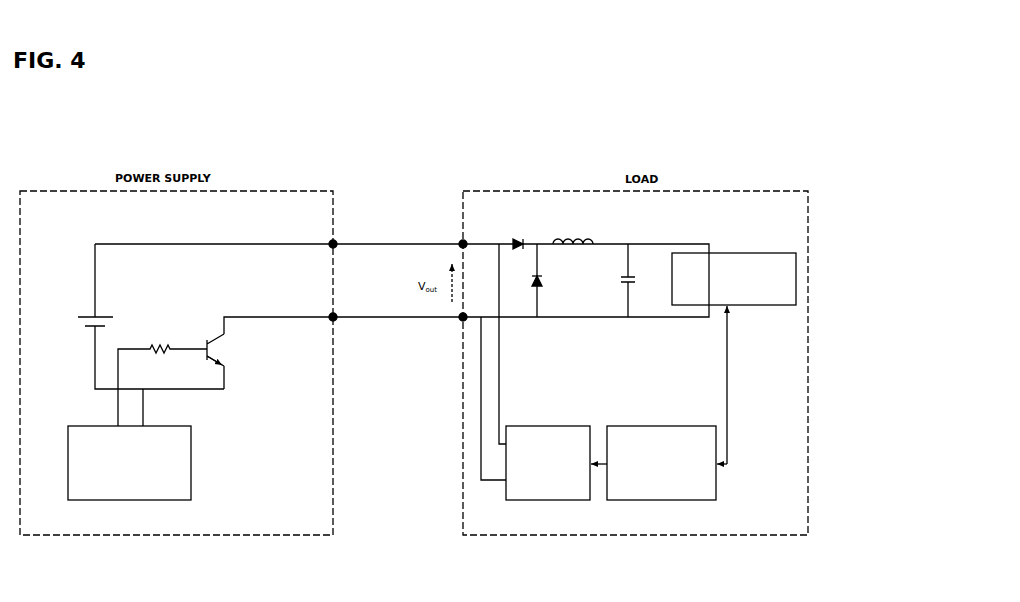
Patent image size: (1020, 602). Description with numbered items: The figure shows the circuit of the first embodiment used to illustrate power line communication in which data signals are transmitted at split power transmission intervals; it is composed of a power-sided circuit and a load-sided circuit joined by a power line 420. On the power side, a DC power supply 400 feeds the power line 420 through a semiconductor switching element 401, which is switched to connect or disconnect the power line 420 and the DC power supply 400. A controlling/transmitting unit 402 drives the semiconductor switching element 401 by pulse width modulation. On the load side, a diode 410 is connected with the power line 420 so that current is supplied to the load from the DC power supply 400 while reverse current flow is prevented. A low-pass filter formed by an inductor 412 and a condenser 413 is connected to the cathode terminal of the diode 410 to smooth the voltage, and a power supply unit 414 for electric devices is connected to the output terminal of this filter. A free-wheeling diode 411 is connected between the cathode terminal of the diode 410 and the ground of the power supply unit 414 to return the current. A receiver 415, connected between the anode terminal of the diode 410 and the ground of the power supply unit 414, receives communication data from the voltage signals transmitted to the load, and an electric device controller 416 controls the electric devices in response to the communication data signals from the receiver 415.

The DC power supply 400 is at (60, 256).
The semiconductor switching element 401 is at (200, 330).
The controlling/transmitting unit 402 is at (204, 462).
The power line 420 is at (358, 230).
The diode 410 is at (504, 208).
The free-wheeling diode 411 is at (532, 288).
The inductor 412 is at (569, 208).
The condenser 413 is at (634, 284).
The power supply unit for electric devices 414 is at (724, 249).
The receiver 415 is at (555, 507).
The electric device controller 416 is at (665, 505).